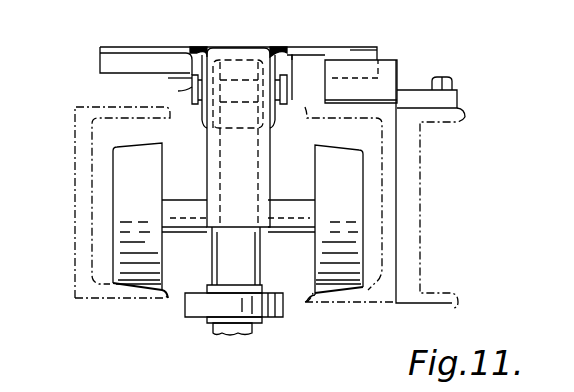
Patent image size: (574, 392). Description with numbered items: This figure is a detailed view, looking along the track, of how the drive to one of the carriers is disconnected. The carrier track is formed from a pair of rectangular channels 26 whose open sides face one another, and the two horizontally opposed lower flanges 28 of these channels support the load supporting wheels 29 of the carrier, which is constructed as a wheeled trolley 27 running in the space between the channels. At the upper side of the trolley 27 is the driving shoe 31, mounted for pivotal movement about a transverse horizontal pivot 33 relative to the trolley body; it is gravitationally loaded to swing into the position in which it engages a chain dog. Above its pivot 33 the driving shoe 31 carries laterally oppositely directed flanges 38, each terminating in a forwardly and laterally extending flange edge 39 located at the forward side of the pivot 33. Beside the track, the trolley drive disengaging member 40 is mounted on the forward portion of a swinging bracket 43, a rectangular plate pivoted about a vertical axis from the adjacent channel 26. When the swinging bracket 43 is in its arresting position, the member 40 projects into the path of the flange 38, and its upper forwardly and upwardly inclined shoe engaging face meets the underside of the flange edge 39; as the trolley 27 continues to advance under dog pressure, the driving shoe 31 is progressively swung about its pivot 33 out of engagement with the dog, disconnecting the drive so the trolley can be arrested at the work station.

The rectangular channels 26 is at (80, 187).
The wheeled trolleys 27 is at (200, 327).
The lower flanges 28 is at (101, 303).
The load supporting wheels 29 is at (152, 163).
The driving shoe 31 is at (281, 48).
The pivot 33 is at (190, 89).
The flanges 38 is at (127, 47).
The flange edge 39 is at (108, 50).
The trolley drive disengaging member 40 is at (385, 76).
The swinging bracket 43 is at (415, 252).